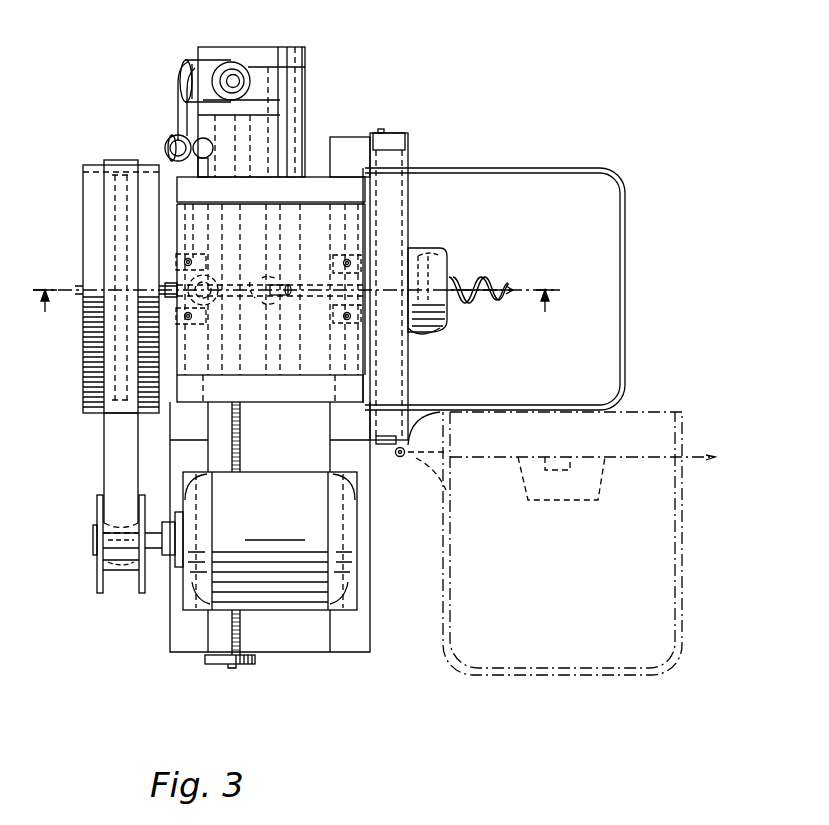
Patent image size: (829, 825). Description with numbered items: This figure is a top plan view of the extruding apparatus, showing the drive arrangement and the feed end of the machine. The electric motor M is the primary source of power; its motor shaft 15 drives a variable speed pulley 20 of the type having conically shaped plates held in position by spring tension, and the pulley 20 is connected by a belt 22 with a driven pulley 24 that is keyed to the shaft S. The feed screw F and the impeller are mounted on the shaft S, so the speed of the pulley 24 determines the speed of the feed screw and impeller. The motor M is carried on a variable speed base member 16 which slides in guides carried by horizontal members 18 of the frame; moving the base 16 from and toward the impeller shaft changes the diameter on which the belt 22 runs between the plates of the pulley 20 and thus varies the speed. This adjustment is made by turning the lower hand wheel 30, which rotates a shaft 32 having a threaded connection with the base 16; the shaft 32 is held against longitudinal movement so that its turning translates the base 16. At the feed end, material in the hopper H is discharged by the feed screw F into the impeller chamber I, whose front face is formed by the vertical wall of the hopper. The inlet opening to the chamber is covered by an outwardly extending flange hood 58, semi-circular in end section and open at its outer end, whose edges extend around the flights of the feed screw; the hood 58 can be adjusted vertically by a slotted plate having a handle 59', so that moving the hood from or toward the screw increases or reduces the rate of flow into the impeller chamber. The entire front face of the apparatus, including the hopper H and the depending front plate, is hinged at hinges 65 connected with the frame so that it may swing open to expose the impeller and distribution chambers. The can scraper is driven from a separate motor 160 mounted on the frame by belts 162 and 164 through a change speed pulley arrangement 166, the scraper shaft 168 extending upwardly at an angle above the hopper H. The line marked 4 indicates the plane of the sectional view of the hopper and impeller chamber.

The motor 160 is at (221, 60).
The belt 162 is at (178, 104).
The change speed pulley arrangement 166 is at (175, 138).
The belt 164 is at (192, 217).
The driven pulley 24 is at (88, 190).
The shaft S is at (78, 282).
The section line 4 is at (296, 314).
The impeller chamber I is at (395, 158).
The hopper H is at (678, 556).
The flange hood 58 is at (440, 256).
The handle 59' is at (516, 399).
The feed screw F is at (468, 276).
The scraper shaft 168 is at (282, 295).
The shaft 32 is at (241, 446).
The electric motor M is at (239, 540).
The hinges 65 is at (402, 460).
The belt 22 is at (104, 462).
The variable speed pulley 20 is at (97, 497).
The motor shaft 15 is at (153, 528).
The variable speed base member 16 is at (182, 604).
The horizontal members 18 is at (360, 626).
The lower hand wheel 30 is at (216, 668).